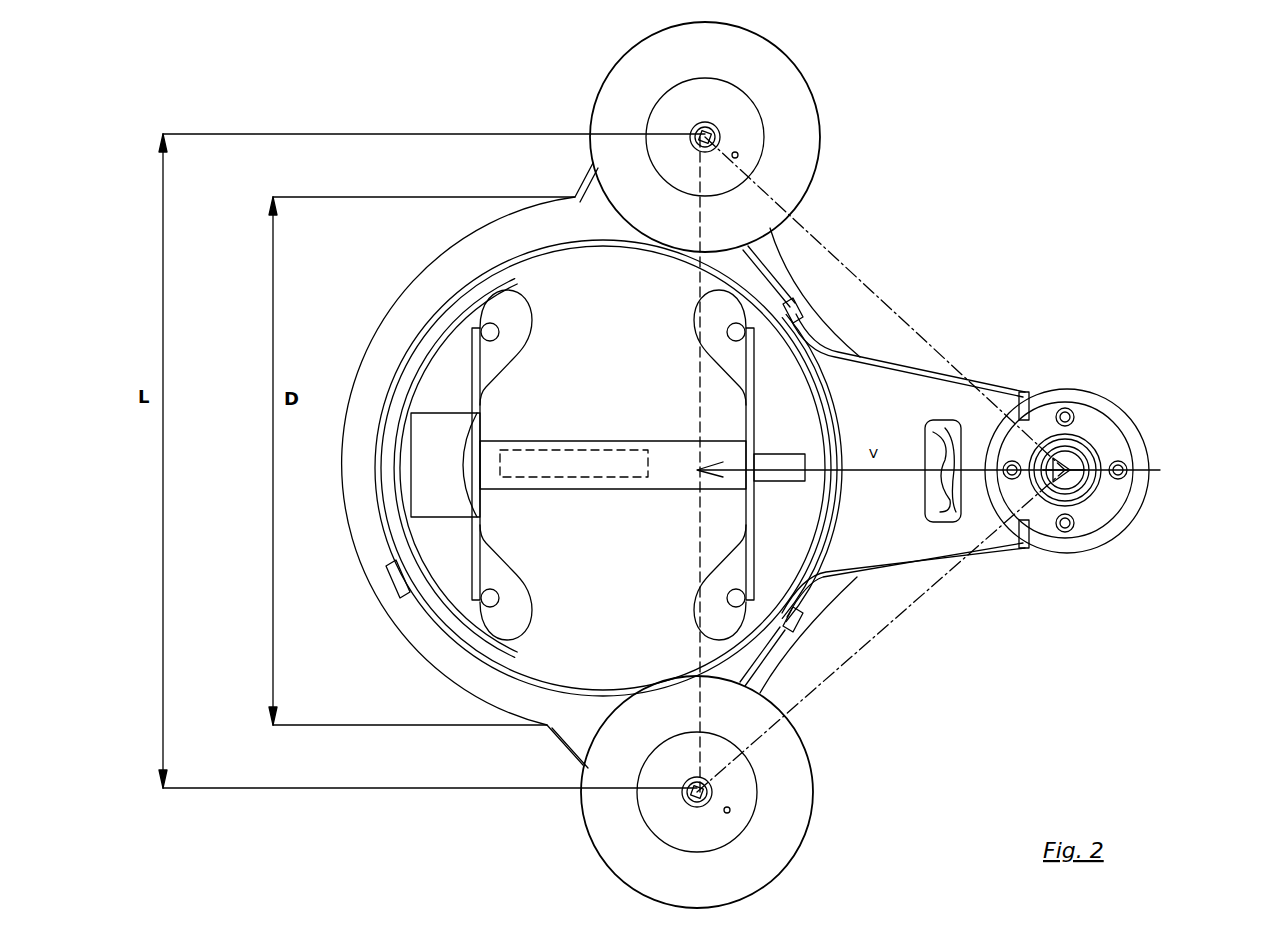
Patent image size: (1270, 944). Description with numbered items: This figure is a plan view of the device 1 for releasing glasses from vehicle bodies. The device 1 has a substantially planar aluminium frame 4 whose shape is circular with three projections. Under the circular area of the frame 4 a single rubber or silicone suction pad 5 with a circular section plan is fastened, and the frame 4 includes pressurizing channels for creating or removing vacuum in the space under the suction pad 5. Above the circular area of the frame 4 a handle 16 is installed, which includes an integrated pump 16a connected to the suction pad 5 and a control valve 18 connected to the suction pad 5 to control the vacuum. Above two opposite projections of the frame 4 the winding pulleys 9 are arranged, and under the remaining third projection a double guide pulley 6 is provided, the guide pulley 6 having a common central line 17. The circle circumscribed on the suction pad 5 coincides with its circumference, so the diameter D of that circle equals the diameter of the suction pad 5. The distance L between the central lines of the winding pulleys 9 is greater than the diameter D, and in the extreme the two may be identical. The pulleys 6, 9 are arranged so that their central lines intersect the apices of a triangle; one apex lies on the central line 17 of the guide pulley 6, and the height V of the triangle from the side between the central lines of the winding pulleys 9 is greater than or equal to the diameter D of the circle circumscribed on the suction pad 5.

The device 1 is at (985, 212).
The frame 4 is at (912, 408).
The suction pad 5 is at (798, 290).
The guide pulley 6 is at (1104, 384).
The winding pulley 9 is at (827, 90).
The handle 16 is at (525, 442).
The integrated pump 16a is at (573, 467).
The common central line 17 is at (1078, 468).
The control valve 18 is at (826, 486).